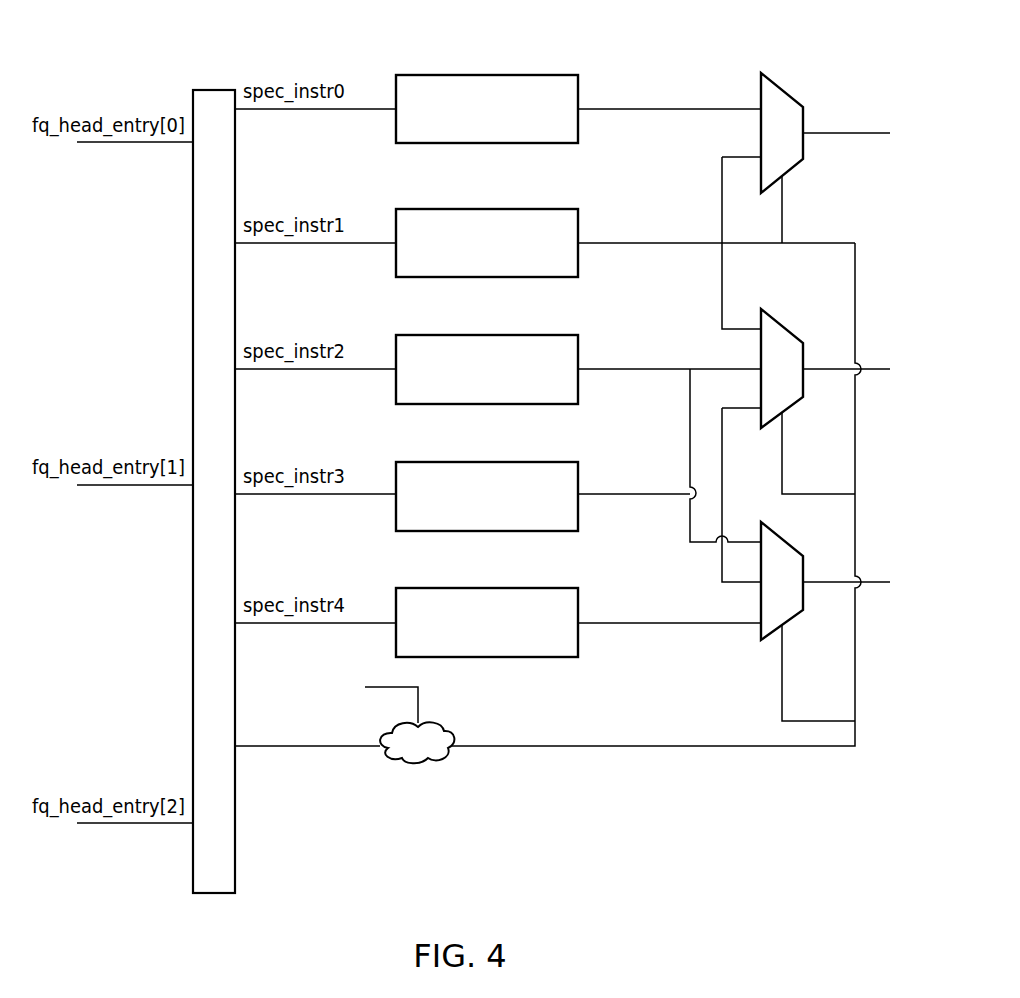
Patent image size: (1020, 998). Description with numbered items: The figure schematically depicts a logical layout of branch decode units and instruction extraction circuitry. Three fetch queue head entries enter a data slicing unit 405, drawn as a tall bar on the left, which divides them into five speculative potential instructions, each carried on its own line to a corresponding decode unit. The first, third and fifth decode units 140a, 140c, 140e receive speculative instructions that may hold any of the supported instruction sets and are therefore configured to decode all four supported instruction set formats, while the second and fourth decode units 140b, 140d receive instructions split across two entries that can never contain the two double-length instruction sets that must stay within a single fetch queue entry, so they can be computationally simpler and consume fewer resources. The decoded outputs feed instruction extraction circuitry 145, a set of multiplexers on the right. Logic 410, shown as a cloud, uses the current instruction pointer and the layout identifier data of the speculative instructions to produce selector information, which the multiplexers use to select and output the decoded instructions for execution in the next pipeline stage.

The first decode unit 140a is at (397, 117).
The second decode unit 140b is at (397, 252).
The third decode unit 140c is at (397, 378).
The fourth decode unit 140d is at (397, 503).
The fifth decode unit 140e is at (397, 630).
The instruction extraction circuitry 145 is at (668, 64).
The data slicing unit 405 is at (214, 895).
The logic 410 is at (404, 763).